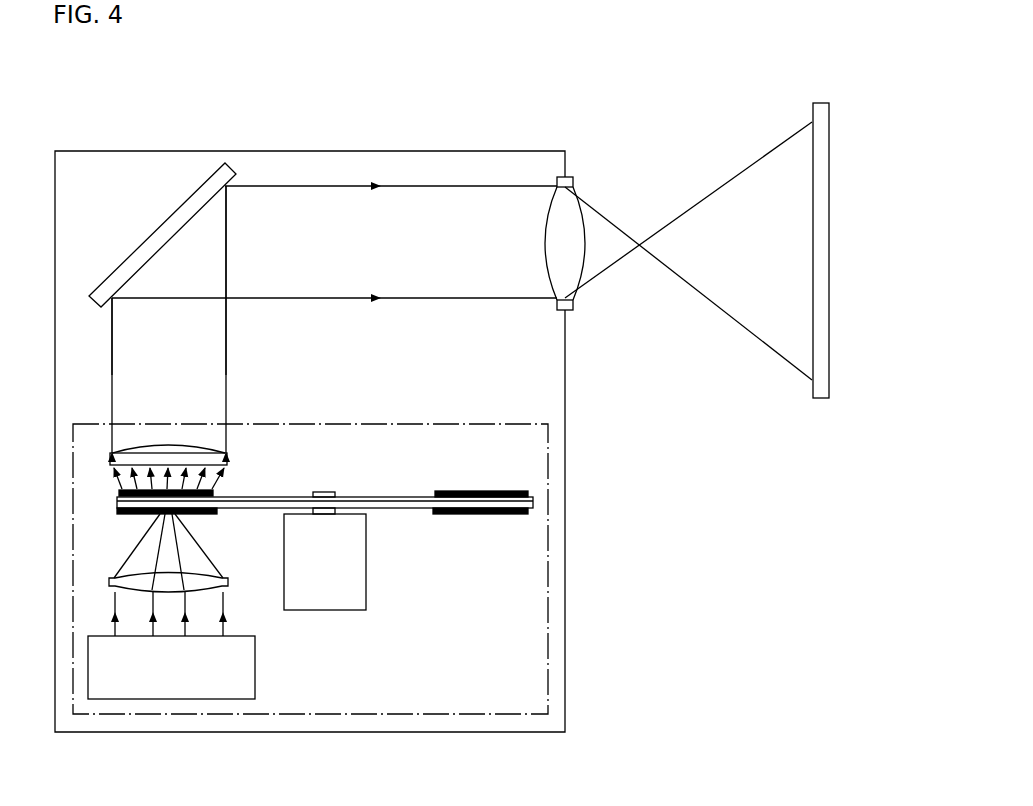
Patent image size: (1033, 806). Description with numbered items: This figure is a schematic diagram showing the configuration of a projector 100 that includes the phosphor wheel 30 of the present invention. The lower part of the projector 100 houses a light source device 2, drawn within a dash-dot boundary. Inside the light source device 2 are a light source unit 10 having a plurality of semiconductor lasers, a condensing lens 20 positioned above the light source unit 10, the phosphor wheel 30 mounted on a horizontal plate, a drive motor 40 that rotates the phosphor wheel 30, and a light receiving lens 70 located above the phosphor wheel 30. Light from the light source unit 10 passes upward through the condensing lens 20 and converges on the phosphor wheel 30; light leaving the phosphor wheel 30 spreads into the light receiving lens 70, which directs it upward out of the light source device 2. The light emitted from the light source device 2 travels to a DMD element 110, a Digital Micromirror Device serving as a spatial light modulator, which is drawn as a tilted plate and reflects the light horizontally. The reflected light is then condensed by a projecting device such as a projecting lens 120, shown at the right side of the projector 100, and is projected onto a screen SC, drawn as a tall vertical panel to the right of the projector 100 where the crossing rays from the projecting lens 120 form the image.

The projector 100 is at (315, 150).
The light source device 2 is at (372, 424).
The DMD element 110 is at (160, 224).
The projecting lens 120 is at (578, 185).
The screen SC is at (820, 103).
The light receiving lens 70 is at (228, 462).
The phosphor wheel 30 is at (386, 497).
The drive motor 40 is at (367, 568).
The condensing lens 20 is at (225, 578).
The light source unit 10 is at (255, 667).